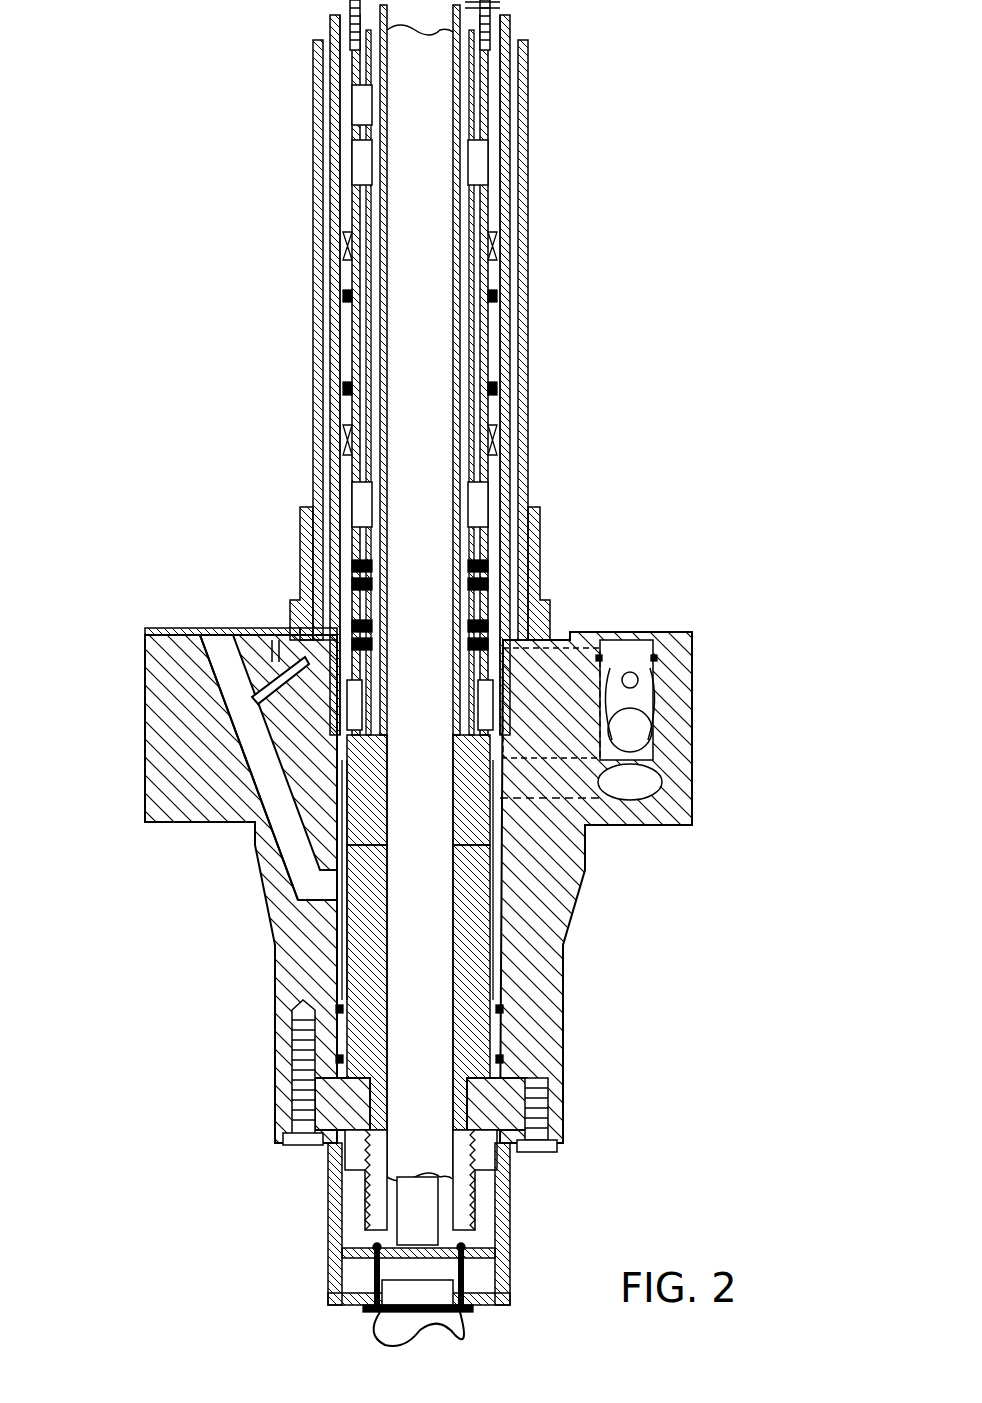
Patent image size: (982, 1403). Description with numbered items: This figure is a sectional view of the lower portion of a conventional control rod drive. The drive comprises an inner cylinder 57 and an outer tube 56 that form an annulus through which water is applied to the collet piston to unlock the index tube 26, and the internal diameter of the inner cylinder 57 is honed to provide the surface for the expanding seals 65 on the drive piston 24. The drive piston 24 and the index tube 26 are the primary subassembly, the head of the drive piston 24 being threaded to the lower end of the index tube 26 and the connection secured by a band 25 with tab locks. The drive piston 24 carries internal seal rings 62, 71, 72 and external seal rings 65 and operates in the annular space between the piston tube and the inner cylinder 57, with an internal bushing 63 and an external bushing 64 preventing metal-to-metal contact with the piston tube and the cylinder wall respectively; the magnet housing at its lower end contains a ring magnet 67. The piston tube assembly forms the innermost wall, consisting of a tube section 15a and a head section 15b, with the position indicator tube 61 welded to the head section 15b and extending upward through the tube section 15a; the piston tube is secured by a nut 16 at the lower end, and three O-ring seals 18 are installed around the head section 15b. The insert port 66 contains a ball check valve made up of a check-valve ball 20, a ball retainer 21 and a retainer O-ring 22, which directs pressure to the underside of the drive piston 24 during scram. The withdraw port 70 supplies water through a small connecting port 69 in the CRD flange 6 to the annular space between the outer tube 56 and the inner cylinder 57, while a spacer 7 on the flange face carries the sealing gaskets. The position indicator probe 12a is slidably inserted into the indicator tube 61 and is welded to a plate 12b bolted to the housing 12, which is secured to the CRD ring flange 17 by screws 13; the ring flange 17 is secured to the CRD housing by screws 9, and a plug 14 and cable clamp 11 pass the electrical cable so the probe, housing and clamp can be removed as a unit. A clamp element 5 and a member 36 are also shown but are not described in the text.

The clamp pin 5 is at (293, 626).
The CRD flange 6 is at (144, 770).
The spacer 7 is at (152, 626).
The screws 9 is at (300, 1142).
The cable clamp 11 is at (370, 1322).
The housing 12 is at (500, 1262).
The position indicator probe 12a is at (445, 1245).
The plate 12b is at (330, 1250).
The screws 13 is at (540, 1150).
The plug 14 is at (455, 1290).
The tube section 15a is at (462, 752).
The head section 15b is at (462, 878).
The nut 16 is at (487, 1195).
The CRD ring flange 17 is at (548, 1108).
The O-ring seals 18 is at (503, 1058).
The check-valve ball 20 is at (655, 735).
The ball retainer 21 is at (640, 720).
The retainer O-ring 22 is at (656, 658).
The drive piston 24 is at (350, 345).
The band 25 is at (497, 45).
The index tube 26 is at (500, 4).
The clamp ring 36 is at (542, 548).
The outer tube 56 is at (524, 186).
The inner cylinder 57 is at (510, 330).
The position indicator tube 61 is at (420, 593).
The internal seal ring 62 is at (352, 112).
The internal bushing 63 is at (375, 158).
The external bushing 64 is at (492, 245).
The external seal rings 65 is at (494, 296).
The insert port 66 is at (630, 642).
The ring magnet 67 is at (360, 692).
The connecting port 69 is at (212, 640).
The withdraw port 70 is at (218, 680).
The internal seal ring 71 is at (367, 644).
The internal seal ring 72 is at (367, 584).